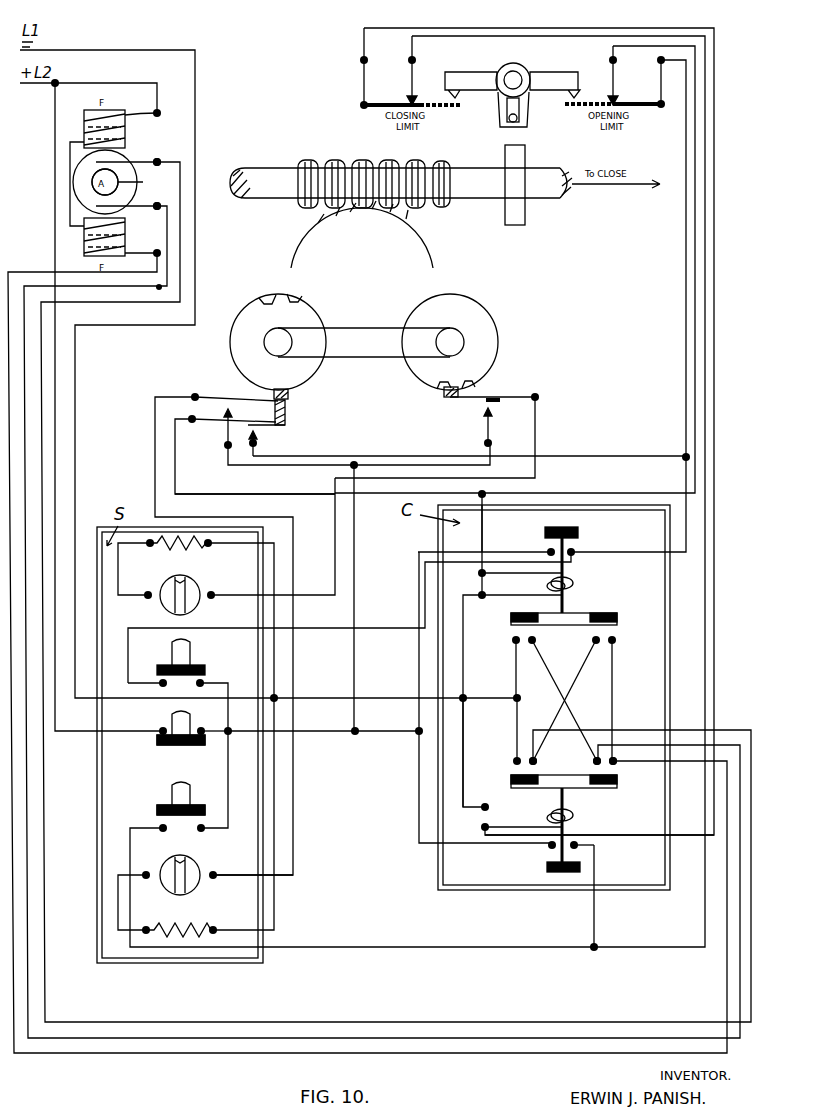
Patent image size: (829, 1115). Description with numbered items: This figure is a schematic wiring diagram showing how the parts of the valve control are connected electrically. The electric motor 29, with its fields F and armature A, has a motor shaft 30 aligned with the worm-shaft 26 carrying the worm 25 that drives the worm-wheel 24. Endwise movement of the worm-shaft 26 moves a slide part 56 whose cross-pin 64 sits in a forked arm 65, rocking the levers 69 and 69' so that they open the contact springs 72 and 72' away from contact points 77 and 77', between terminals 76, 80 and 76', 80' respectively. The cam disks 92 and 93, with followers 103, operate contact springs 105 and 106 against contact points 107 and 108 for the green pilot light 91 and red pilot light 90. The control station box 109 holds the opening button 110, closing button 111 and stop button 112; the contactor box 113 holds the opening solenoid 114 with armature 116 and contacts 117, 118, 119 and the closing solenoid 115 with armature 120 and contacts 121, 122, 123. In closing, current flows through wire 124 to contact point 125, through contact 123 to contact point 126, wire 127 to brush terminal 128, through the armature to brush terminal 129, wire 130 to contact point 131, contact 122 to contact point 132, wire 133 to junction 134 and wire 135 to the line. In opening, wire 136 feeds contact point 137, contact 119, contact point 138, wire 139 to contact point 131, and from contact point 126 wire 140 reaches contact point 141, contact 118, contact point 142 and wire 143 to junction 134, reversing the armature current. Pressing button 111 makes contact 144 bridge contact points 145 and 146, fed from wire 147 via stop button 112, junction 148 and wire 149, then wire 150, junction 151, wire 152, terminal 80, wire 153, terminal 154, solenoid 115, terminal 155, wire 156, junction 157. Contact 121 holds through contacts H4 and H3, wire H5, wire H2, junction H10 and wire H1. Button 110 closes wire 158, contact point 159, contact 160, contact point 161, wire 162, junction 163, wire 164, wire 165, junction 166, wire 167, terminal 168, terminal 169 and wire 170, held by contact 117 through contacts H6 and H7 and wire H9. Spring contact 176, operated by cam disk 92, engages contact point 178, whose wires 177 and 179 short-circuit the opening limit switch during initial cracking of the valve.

The worm-wheel 24 is at (362, 234).
The worm 25 is at (390, 170).
The worm-shaft 26 is at (249, 170).
The electric motor 29 is at (74, 182).
The motor shaft 30 is at (118, 182).
The slide block 56 is at (506, 140).
The cross-pin 64 is at (521, 120).
The forked arm 65 is at (521, 110).
The lever 69 is at (487, 74).
The lever 69' is at (558, 74).
The contact spring 72 is at (410, 119).
The contact spring 72' is at (615, 122).
The wire terminal 76 is at (378, 66).
The wire terminal 76' is at (627, 71).
The contact point 77 is at (401, 92).
The contact point 77' is at (600, 92).
The wire terminal 80 is at (426, 66).
The wire terminal 80' is at (649, 80).
The pilot light 90 is at (166, 591).
The pilot light 91 is at (166, 882).
The cam disk 92 is at (300, 321).
The cam disk 93 is at (486, 333).
The follower 103 is at (290, 397).
The contact spring 105 is at (242, 396).
The contact spring 106 is at (495, 396).
The contact point 107 is at (192, 413).
The contact point 108 is at (493, 412).
The box 109 is at (100, 773).
The valve-opening button 110 is at (172, 650).
The valve-closing button 111 is at (172, 795).
The stop button 112 is at (190, 723).
The box 113 is at (450, 861).
The solenoid 114 is at (573, 582).
The solenoid 115 is at (573, 815).
The armature 116 is at (572, 598).
The contact 117 is at (545, 535).
The contact 118 is at (512, 627).
The contact 119 is at (615, 626).
The armature 120 is at (560, 805).
The contact 121 is at (546, 867).
The contact 122 is at (512, 780).
The contact 123 is at (616, 783).
The wire 124 is at (22, 272).
The contact point 125 is at (618, 763).
The contact point 126 is at (592, 762).
The wire 127 is at (95, 288).
The brush terminal 128 is at (156, 210).
The brush terminal 129 is at (158, 158).
The wire 130 is at (181, 240).
The contact point 131 is at (538, 760).
The contact point 132 is at (514, 760).
The wire 133 is at (516, 729).
The junction 134 is at (514, 701).
The wire 135 is at (196, 112).
The wire 136 is at (614, 700).
The contact point 137 is at (615, 645).
The contact point 138 is at (593, 643).
The wire 139 is at (573, 673).
The wire 140 is at (551, 673).
The contact point 141 is at (535, 639).
The contact point 142 is at (512, 643).
The wire 143 is at (516, 672).
The contact 144 is at (188, 816).
The contact point 145 is at (203, 832).
The contact point 146 is at (160, 832).
The wire 147 is at (55, 104).
The junction 148 is at (199, 746).
The wire 149 is at (229, 745).
The wire 150 is at (350, 948).
The junction 151 is at (592, 951).
The wire 152 is at (542, 36).
The wire 153 is at (540, 28).
The terminal 154 is at (481, 828).
The terminal 155 is at (484, 806).
The wire 156 is at (460, 761).
The junction 157 is at (462, 706).
The wire 158 is at (227, 735).
The contact point 159 is at (204, 683).
The contact 160 is at (197, 686).
The contact point 161 is at (160, 686).
The wire 162 is at (226, 628).
The junction 163 is at (684, 455).
The wire 164 is at (684, 248).
The wire 165 is at (694, 320).
The junction 166 is at (484, 495).
The wire 167 is at (480, 526).
The terminal 168 is at (480, 574).
The terminal 169 is at (481, 598).
The wire 170 is at (462, 622).
The spring contact 176 is at (216, 428).
The wire 177 is at (218, 494).
The contact point 178 is at (259, 438).
The wire 179 is at (585, 456).
The wire H1 is at (318, 732).
The wire H2 is at (418, 790).
The contact H3 is at (548, 847).
The contact H4 is at (580, 847).
The wire H5 is at (596, 886).
The contact H6 is at (576, 550).
The contact H7 is at (547, 553).
The wire H9 is at (416, 565).
The junction H10 is at (415, 735).